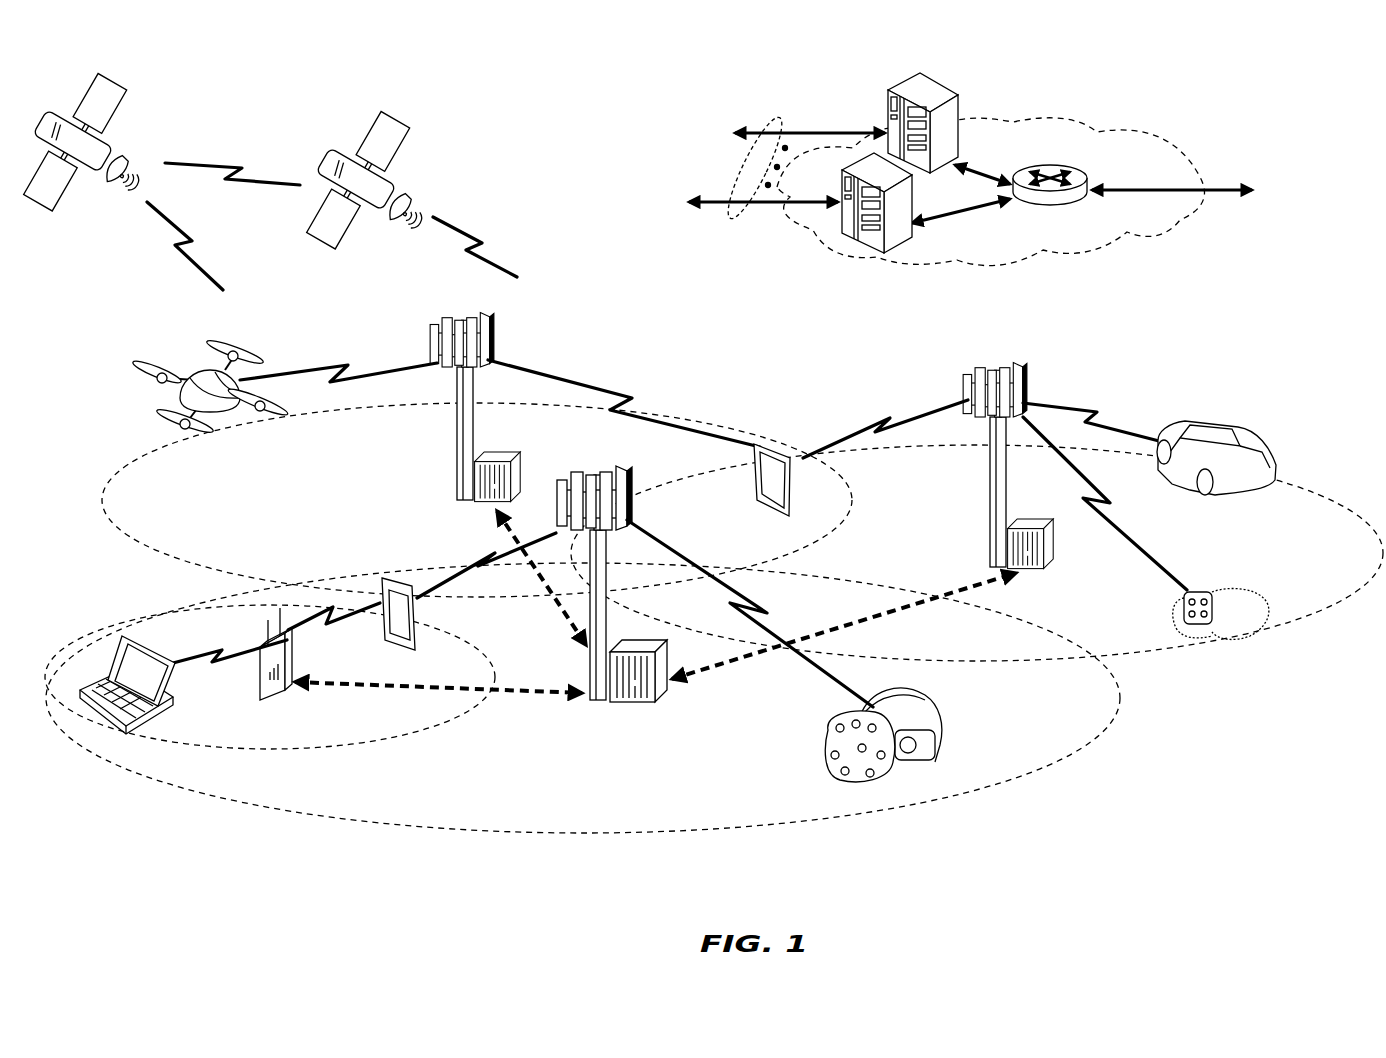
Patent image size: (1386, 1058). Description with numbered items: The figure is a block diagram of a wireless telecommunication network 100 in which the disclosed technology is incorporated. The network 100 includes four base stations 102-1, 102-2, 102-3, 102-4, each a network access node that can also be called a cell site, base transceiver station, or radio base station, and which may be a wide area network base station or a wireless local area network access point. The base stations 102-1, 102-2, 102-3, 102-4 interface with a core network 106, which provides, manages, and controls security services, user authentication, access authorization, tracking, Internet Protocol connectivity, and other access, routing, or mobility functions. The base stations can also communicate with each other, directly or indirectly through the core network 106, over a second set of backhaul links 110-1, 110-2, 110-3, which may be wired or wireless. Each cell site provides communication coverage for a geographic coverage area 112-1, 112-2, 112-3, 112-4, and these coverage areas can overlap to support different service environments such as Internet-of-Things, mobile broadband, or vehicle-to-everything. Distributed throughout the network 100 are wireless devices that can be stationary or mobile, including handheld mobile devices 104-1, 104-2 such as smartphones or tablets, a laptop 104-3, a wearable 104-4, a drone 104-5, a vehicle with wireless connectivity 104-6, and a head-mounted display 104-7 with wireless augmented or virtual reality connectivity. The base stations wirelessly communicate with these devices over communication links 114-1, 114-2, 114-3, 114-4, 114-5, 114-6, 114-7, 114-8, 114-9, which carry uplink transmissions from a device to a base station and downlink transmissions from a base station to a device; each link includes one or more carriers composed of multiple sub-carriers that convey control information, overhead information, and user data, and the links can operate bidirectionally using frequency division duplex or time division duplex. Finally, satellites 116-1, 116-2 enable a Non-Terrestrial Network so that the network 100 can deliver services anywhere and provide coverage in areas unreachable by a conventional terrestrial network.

The wireless telecommunication network 100 is at (1252, 104).
The base station 102-1 is at (590, 704).
The base station 102-2 is at (455, 450).
The base station 102-3 is at (990, 488).
The base station 102-4 is at (260, 688).
The handheld mobile device 104-1 is at (418, 598).
The handheld mobile device 104-2 is at (753, 488).
The laptop 104-3 is at (102, 732).
The wearable 104-4 is at (1202, 594).
The drone 104-5 is at (218, 418).
The vehicle with wireless connectivity 104-6 is at (1242, 436).
The head-mounted display 104-7 is at (942, 720).
The core network 106 is at (1084, 258).
The backhaul link 110-1 is at (336, 690).
The backhaul link 110-2 is at (912, 612).
The backhaul link 110-3 is at (558, 622).
The geographic coverage area 112-1 is at (525, 836).
The geographic coverage area 112-2 is at (398, 758).
The geographic coverage area 112-3 is at (162, 562).
The geographic coverage area 112-4 is at (1302, 484).
The communication link 114-1 is at (758, 612).
The communication link 114-2 is at (482, 556).
The communication link 114-3 is at (187, 660).
The communication link 114-4 is at (330, 630).
The communication link 114-5 is at (336, 366).
The communication link 114-6 is at (635, 406).
The communication link 114-7 is at (875, 424).
The communication link 114-8 is at (1124, 508).
The communication link 114-9 is at (1090, 414).
The satellite 116-1 is at (124, 152).
The satellite 116-2 is at (410, 194).